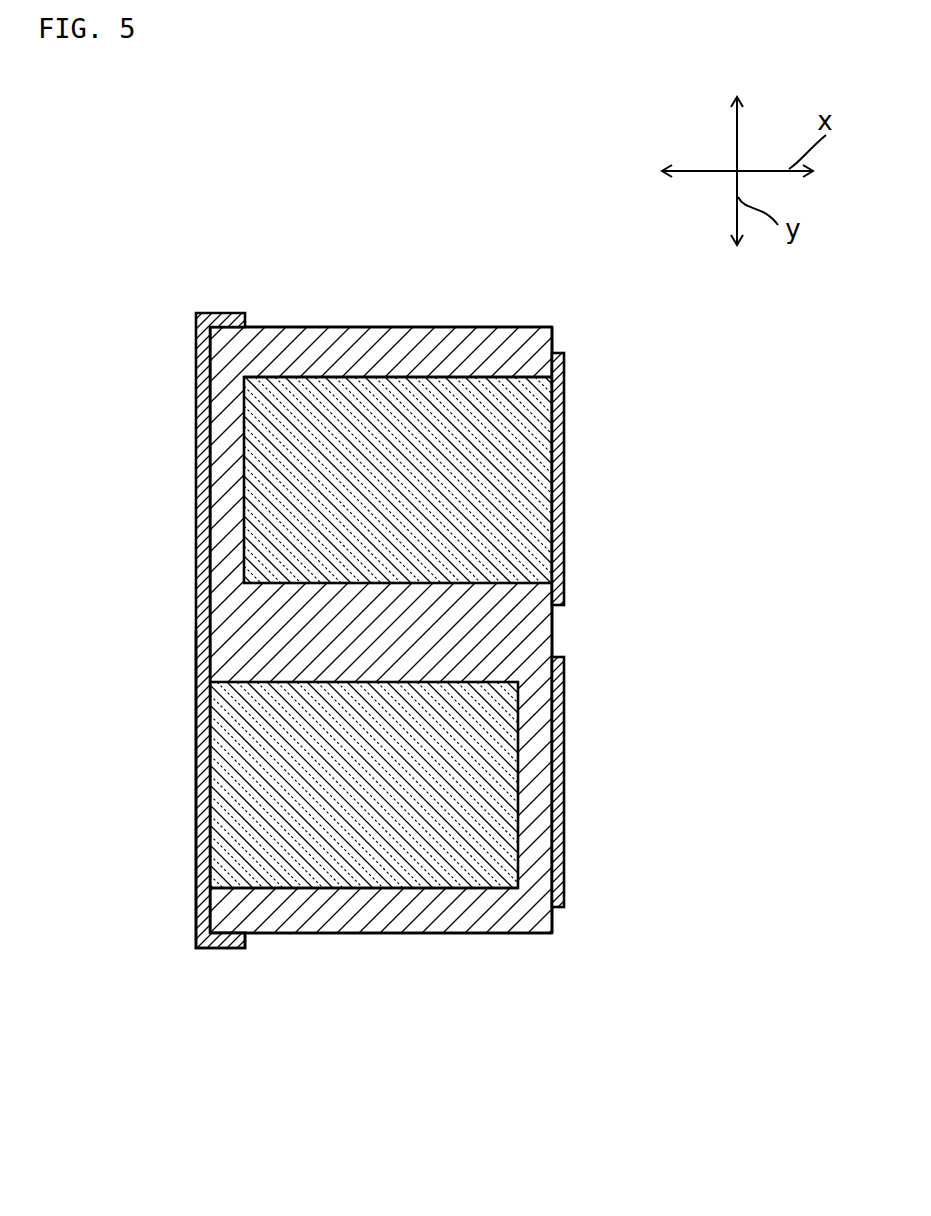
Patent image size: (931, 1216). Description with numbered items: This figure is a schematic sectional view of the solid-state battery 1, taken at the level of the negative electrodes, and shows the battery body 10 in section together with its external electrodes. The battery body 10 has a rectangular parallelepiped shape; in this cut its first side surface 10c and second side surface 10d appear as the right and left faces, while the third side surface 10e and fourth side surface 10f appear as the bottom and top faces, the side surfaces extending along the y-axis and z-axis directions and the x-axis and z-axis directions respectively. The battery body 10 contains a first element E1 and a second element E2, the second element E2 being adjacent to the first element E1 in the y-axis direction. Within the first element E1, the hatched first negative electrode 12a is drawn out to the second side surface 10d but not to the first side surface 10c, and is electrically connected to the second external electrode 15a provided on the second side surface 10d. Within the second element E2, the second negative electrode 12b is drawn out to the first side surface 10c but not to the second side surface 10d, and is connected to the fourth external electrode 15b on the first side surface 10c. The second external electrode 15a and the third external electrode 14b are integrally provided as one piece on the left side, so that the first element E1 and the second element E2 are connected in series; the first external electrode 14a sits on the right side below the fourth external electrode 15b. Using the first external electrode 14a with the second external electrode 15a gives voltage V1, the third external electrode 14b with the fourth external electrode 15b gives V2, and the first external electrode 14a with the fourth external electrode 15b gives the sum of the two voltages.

The solid-state battery 1 is at (391, 609).
The battery body 10 is at (406, 327).
The first side surface 10c is at (552, 632).
The second side surface 10d is at (207, 637).
The third side surface 10e is at (469, 933).
The fourth side surface 10f is at (482, 327).
The first negative electrode 12a is at (288, 888).
The second negative electrode 12b is at (363, 378).
The first external electrode 14a is at (565, 772).
The third external electrode 14b is at (197, 470).
The second external electrode 15a is at (197, 790).
The fourth external electrode 15b is at (565, 482).
The first element E1 is at (385, 889).
The second element E2 is at (327, 377).